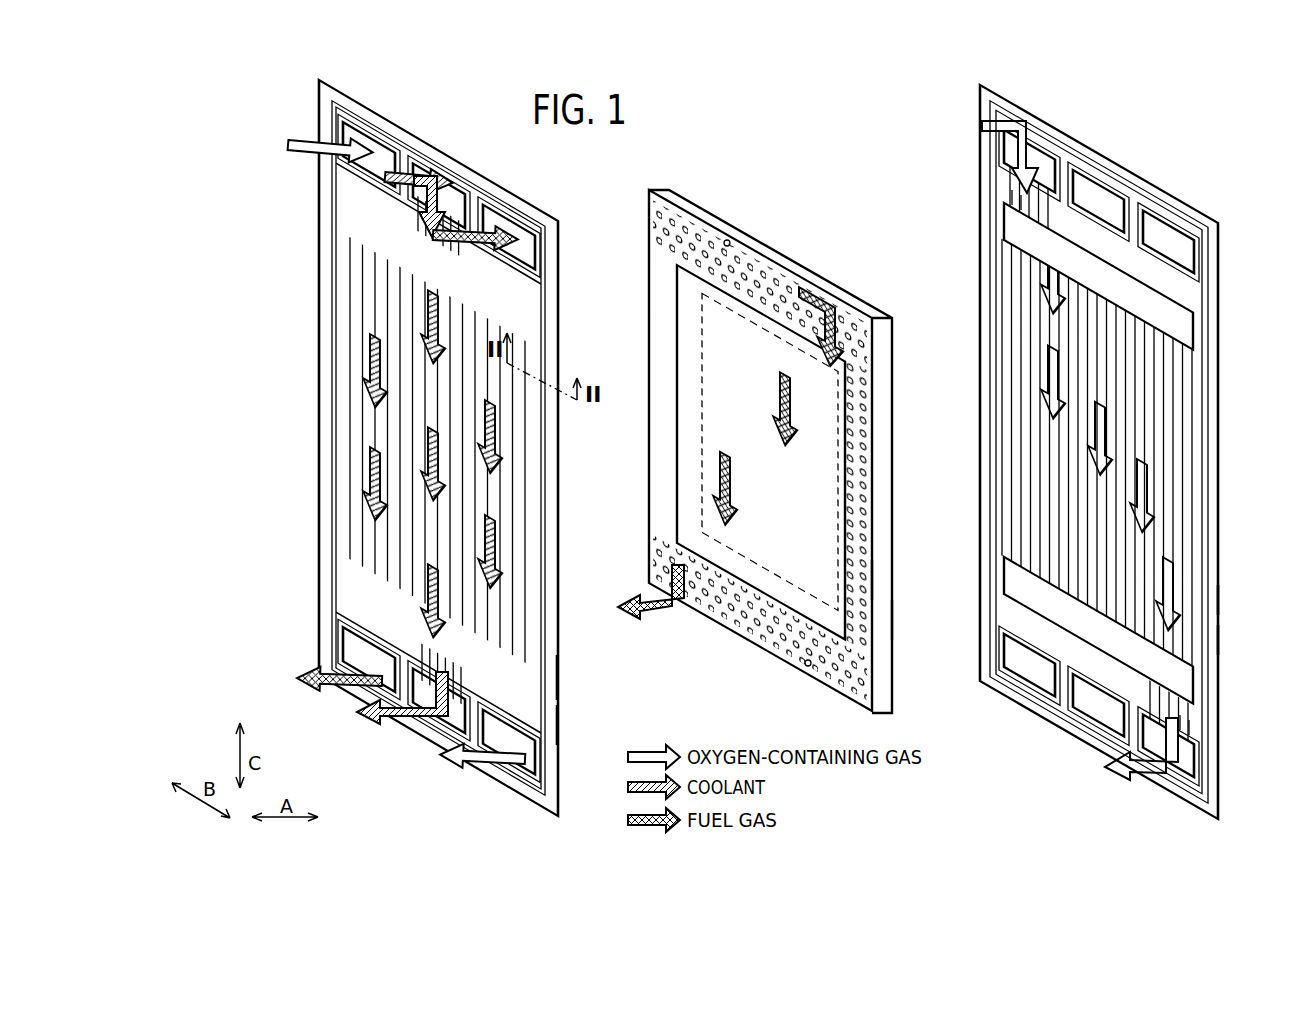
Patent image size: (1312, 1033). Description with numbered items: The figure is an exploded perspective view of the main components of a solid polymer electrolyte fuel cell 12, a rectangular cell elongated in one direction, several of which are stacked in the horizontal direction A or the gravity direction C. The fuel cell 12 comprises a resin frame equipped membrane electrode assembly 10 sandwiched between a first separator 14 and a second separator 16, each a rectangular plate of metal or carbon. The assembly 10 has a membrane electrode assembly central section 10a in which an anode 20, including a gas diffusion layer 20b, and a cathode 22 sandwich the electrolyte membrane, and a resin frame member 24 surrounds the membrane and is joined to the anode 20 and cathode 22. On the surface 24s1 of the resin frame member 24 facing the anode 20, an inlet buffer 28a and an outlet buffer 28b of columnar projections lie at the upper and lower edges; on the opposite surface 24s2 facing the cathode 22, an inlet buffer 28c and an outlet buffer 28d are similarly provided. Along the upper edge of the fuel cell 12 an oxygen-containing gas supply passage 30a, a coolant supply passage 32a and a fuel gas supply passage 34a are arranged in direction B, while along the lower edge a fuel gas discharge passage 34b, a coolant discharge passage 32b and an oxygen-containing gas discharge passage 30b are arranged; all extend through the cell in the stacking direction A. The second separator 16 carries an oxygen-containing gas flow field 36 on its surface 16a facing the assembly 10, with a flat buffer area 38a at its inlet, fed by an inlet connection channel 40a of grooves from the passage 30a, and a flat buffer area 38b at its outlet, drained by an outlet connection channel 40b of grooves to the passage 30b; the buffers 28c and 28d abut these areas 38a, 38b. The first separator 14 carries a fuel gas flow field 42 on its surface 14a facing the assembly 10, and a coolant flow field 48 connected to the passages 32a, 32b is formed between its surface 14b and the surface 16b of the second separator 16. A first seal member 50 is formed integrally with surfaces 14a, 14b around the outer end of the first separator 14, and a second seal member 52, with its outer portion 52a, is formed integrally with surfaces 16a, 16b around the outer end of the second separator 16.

The resin frame equipped membrane electrode assembly 10 is at (637, 217).
The membrane electrode assembly central section 10a is at (678, 322).
The solid polymer electrolyte fuel cell 12 is at (798, 140).
The first separator 14 is at (316, 104).
The surface of first separator 14a is at (553, 686).
The surface of first separator 14b is at (553, 730).
The second separator 16 is at (969, 113).
The surface of second separator 16a is at (1213, 640).
The surface of second separator 16b is at (1213, 600).
The anode 20 is at (709, 392).
The gas diffusion layer 20b is at (737, 486).
The cathode 22 is at (835, 428).
The resin frame member 24 is at (689, 195).
The surface of resin frame member 24s1 is at (860, 618).
The surface of resin frame member 24s2 is at (858, 578).
The inlet buffer 28a is at (760, 280).
The outlet buffer 28b is at (744, 625).
The inlet buffer 28c is at (727, 238).
The outlet buffer 28d is at (808, 668).
The oxygen-containing gas supply passage 30a is at (400, 150).
The oxygen-containing gas discharge passage 30b is at (517, 755).
The coolant supply passage 32a is at (455, 190).
The coolant discharge passage 32b is at (432, 725).
The fuel gas supply passage 34a is at (507, 228).
The fuel gas discharge passage 34b is at (355, 663).
The oxygen-containing gas flow field 36 is at (1170, 522).
The buffer area 38a is at (1185, 327).
The buffer area 38b is at (1185, 687).
The inlet connection channel 40a is at (1025, 192).
The outlet connection channel 40b is at (1180, 732).
The fuel gas flow field 42 is at (385, 435).
The coolant flow field 48 is at (370, 470).
The first seal member 50 is at (330, 288).
The second seal member 52 is at (1219, 243).
The outer bead seal 52a is at (1213, 382).